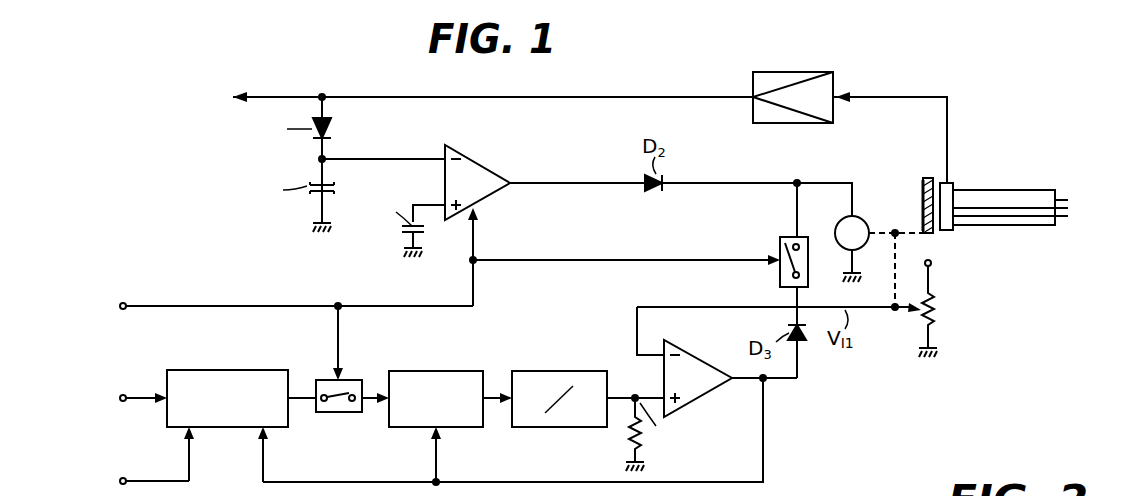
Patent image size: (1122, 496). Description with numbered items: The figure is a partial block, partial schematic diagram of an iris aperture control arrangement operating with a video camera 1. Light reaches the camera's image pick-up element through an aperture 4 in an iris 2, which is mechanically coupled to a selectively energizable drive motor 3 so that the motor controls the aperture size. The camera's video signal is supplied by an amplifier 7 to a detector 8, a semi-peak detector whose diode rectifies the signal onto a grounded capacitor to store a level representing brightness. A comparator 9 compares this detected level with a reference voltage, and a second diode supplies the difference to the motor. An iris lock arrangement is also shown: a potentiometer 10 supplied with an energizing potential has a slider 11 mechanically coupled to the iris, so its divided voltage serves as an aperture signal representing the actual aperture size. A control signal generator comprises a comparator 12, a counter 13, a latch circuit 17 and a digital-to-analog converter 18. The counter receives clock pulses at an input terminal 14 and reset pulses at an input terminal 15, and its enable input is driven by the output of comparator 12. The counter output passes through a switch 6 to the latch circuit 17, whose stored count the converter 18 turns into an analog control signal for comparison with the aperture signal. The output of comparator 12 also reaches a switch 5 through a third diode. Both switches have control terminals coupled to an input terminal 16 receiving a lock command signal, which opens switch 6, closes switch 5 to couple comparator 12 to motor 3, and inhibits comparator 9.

The video camera 1 is at (993, 190).
The iris 2 is at (926, 178).
The drive motor 3 is at (860, 218).
The aperture 4 is at (921, 204).
The switch 5 is at (779, 240).
The switch 6 is at (355, 380).
The amplifier 7 is at (836, 78).
The detector 8 is at (336, 150).
The comparator 9 is at (480, 165).
The potentiometer 10 is at (937, 322).
The slider 11 is at (915, 310).
The comparator 12 is at (702, 357).
The counter 13 is at (267, 370).
The input terminal 14 is at (125, 395).
The input terminal 15 is at (125, 478).
The input terminal 16 is at (126, 303).
The latch circuit 17 is at (455, 371).
The digital-to-analog converter 18 is at (563, 371).